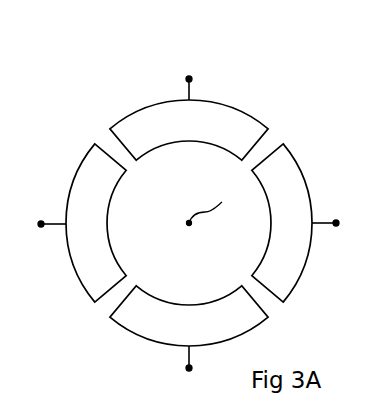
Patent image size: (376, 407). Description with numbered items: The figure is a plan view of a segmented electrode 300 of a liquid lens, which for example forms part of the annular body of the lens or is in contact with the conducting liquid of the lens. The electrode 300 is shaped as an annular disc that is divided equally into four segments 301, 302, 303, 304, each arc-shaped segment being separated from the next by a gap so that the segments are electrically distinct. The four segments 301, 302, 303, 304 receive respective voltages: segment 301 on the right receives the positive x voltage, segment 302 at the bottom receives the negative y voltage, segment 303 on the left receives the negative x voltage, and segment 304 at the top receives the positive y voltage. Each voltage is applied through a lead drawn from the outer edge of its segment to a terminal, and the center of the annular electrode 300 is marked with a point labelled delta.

The electrode 300 is at (94, 93).
The segment 301 is at (292, 180).
The segment 302 is at (146, 325).
The segment 303 is at (90, 193).
The segment 304 is at (140, 128).